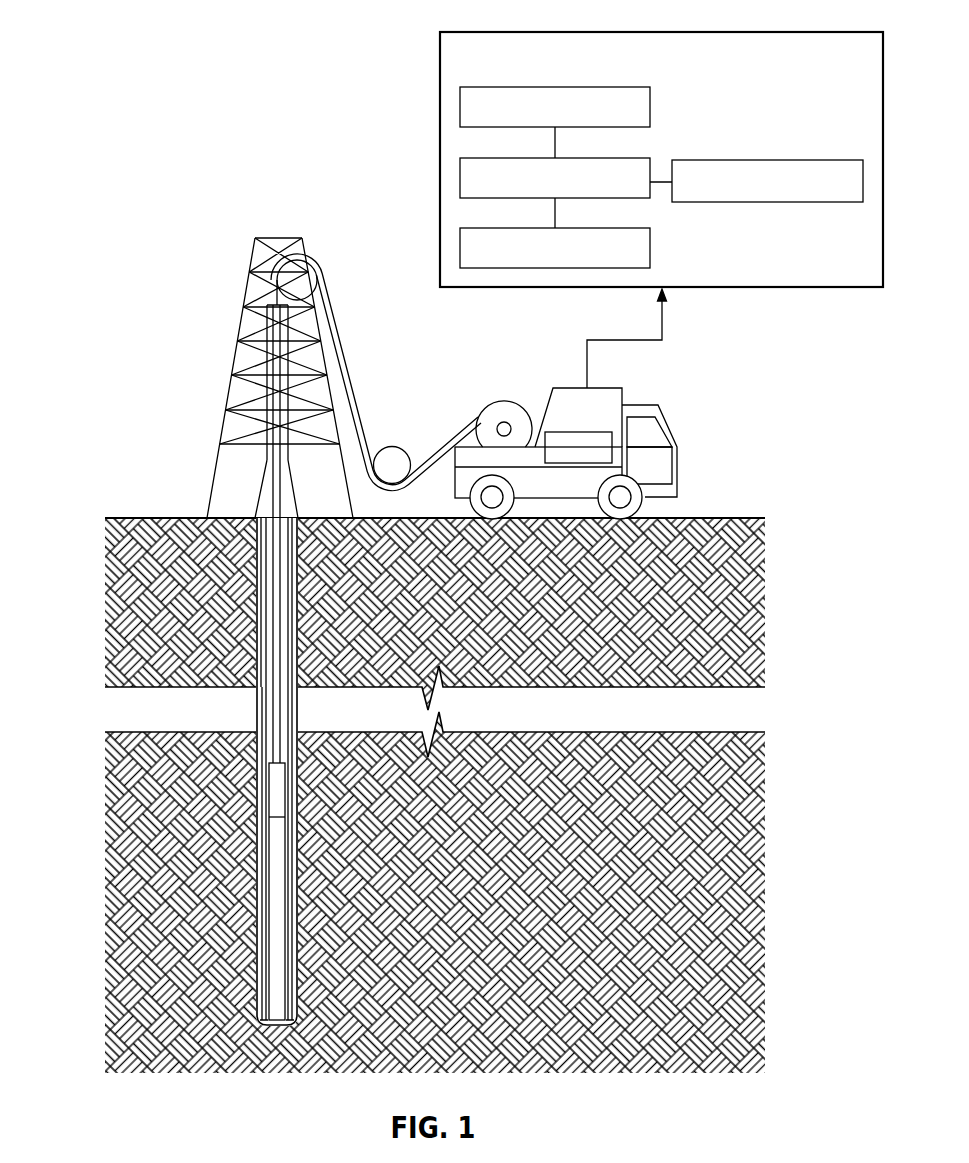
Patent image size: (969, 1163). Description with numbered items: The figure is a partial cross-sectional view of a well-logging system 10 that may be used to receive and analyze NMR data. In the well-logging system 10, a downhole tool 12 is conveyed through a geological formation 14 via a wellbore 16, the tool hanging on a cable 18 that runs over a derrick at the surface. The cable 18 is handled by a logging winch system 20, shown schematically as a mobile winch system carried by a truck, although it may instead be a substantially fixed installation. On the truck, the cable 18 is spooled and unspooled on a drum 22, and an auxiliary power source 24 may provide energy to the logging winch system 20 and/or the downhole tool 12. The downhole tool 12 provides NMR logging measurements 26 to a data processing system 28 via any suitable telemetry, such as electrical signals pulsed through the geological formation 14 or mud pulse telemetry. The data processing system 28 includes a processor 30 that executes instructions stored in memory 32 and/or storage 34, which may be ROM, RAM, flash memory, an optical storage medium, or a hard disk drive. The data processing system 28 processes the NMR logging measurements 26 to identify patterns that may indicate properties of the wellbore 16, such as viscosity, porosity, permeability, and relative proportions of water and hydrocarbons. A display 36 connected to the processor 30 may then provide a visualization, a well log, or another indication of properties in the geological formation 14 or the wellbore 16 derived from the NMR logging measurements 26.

The well-logging system 10 is at (107, 107).
The downhole tool 12 is at (270, 797).
The geological formation 14 is at (122, 840).
The wellbore 16 is at (257, 580).
The cable 18 is at (345, 351).
The logging winch system 20 is at (553, 433).
The drum 22 is at (495, 405).
The auxiliary power source 24 is at (578, 388).
The NMR logging measurements 26 is at (662, 312).
The data processing system 28 is at (636, 143).
The processor 30 is at (460, 180).
The memory 32 is at (460, 108).
The storage 34 is at (460, 250).
The display 36 is at (807, 160).